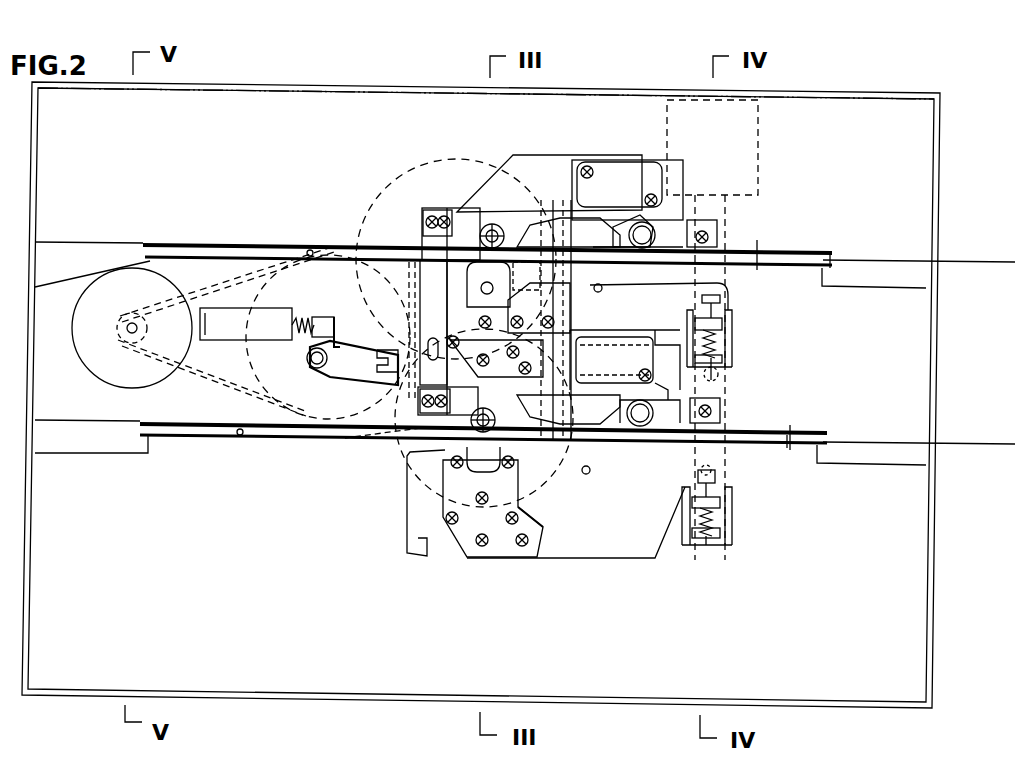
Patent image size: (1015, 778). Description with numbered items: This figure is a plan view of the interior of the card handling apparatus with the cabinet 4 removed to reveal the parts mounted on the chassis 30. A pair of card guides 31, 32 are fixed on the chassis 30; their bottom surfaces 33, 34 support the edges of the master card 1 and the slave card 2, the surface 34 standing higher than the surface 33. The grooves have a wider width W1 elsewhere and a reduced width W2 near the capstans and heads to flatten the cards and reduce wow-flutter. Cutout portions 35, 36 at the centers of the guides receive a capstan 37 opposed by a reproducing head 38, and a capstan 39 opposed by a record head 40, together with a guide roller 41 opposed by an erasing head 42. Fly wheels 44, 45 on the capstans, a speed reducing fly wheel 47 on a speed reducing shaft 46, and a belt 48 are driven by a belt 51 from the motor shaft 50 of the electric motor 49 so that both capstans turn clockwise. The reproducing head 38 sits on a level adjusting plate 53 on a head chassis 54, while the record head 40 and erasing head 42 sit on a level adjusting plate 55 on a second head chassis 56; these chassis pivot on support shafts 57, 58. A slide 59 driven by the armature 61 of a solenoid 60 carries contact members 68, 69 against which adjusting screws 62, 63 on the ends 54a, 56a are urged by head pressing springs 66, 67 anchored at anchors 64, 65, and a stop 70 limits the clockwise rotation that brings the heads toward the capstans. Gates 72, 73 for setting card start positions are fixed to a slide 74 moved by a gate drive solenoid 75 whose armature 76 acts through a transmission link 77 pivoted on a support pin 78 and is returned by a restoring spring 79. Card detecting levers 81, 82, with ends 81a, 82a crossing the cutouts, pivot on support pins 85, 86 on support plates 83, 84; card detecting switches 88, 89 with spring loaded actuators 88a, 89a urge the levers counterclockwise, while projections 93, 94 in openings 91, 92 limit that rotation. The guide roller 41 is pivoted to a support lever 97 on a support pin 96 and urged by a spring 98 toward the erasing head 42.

The master card 1 is at (963, 444).
The slave card 2 is at (963, 262).
The cabinet 4 is at (832, 93).
The chassis 30 is at (905, 577).
The card guide 31 is at (300, 257).
The card guide 32 is at (797, 268).
The bottom surface 33 is at (112, 453).
The bottom surface 34 is at (112, 243).
The cutout portion 35 is at (413, 452).
The cutout portion 36 is at (413, 278).
The capstan 37 is at (502, 410).
The reproducing head 38 is at (442, 471).
The capstan 39 is at (462, 214).
The record head 40 is at (500, 319).
The guide roller 41 is at (549, 183).
The erasing head 42 is at (553, 297).
The fly wheel 44 is at (530, 500).
The fly wheel 45 is at (452, 178).
The speed reducing shaft 46 is at (355, 336).
The speed reducing fly wheel 47 is at (303, 412).
The belt 48 is at (347, 433).
The electric motor 49 is at (140, 387).
The motor shaft 50 is at (128, 338).
The belt 51 is at (212, 376).
The level adjusting plate 53 is at (468, 532).
The head chassis 54 is at (620, 558).
The end of head chassis 54a is at (722, 500).
The level adjusting plate 55 is at (433, 333).
The second head chassis 56 is at (720, 298).
The end of head chassis 56a is at (722, 324).
The support shaft 57 is at (589, 473).
The support shaft 58 is at (600, 291).
The slide 59 is at (722, 412).
The solenoid 60 is at (758, 157).
The armature 61 is at (717, 223).
The adjusting screw 62 is at (700, 480).
The adjusting screw 63 is at (700, 296).
The anchor 64 is at (700, 545).
The anchor 65 is at (718, 368).
The head pressing spring 66 is at (720, 536).
The head pressing spring 67 is at (720, 356).
The contact member 68 is at (720, 516).
The contact member 69 is at (722, 340).
The stop 70 is at (722, 545).
The gate 72 is at (420, 436).
The gate 73 is at (430, 199).
The slide 74 is at (427, 311).
The gate drive solenoid 75 is at (258, 333).
The armature 76 is at (313, 318).
The transmission link 77 is at (345, 376).
The support pin 78 is at (312, 367).
The restoring spring 79 is at (297, 318).
The card detecting lever 81 is at (568, 413).
The end of card detecting lever 81a is at (517, 463).
The card detecting lever 82 is at (560, 216).
The end of card detecting lever 82a is at (497, 216).
The support plate 83 is at (663, 348).
The support plate 84 is at (548, 162).
The support pin 85 is at (650, 412).
The support pin 86 is at (655, 222).
The card detecting switch 88 is at (625, 348).
The actuator 88a is at (611, 360).
The card detecting switch 89 is at (602, 205).
The actuator 89a is at (612, 165).
The opening 91 is at (665, 387).
The opening 92 is at (683, 165).
The projection 93 is at (636, 361).
The projection 94 is at (619, 184).
The support pin 96 is at (595, 210).
The support lever 97 is at (545, 170).
The spring 98 is at (510, 165).
The width of card running grooves W1 is at (755, 258).
The reduced width W2 is at (557, 302).